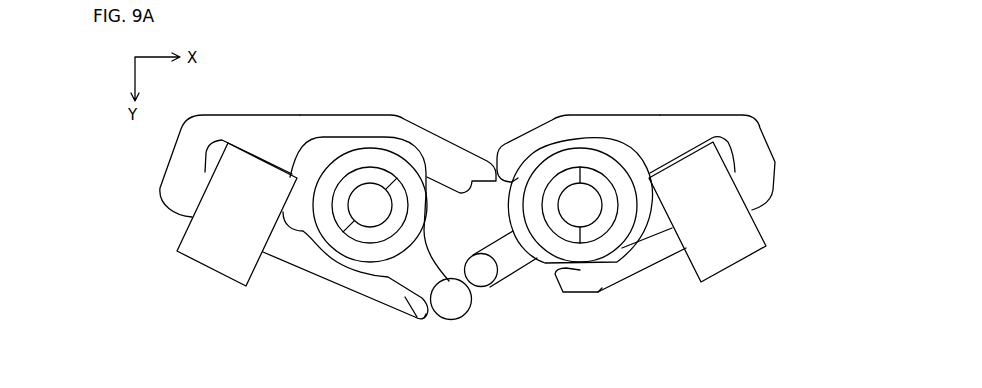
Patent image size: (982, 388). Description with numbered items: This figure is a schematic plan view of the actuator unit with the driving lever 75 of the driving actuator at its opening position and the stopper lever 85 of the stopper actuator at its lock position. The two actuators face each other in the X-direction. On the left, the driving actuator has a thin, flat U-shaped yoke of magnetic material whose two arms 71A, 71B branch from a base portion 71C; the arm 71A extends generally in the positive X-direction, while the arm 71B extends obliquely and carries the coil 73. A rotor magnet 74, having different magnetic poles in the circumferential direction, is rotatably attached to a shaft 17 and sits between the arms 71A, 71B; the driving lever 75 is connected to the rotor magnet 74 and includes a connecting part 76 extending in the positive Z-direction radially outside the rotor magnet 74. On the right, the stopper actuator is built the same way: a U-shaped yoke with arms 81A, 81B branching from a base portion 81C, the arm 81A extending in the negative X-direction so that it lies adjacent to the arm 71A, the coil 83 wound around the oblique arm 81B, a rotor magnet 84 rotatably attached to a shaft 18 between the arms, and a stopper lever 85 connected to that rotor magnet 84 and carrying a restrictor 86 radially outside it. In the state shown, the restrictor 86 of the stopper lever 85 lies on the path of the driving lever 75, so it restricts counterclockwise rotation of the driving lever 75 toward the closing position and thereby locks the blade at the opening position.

The shaft 17 is at (371, 199).
The shaft 18 is at (574, 203).
The arm 71A is at (402, 133).
The arm 71B is at (333, 272).
The base portion 71C is at (190, 158).
The coil 73 is at (215, 258).
The rotor magnet 74 is at (360, 177).
The driving lever 75 is at (400, 322).
The connecting part 76 is at (449, 302).
The arm 81A is at (528, 147).
The arm 81B is at (612, 280).
The base portion 81C is at (748, 137).
The coil 83 is at (730, 253).
The rotor magnet 84 is at (593, 177).
The stopper lever 85 is at (512, 280).
The restrictor 86 is at (482, 278).